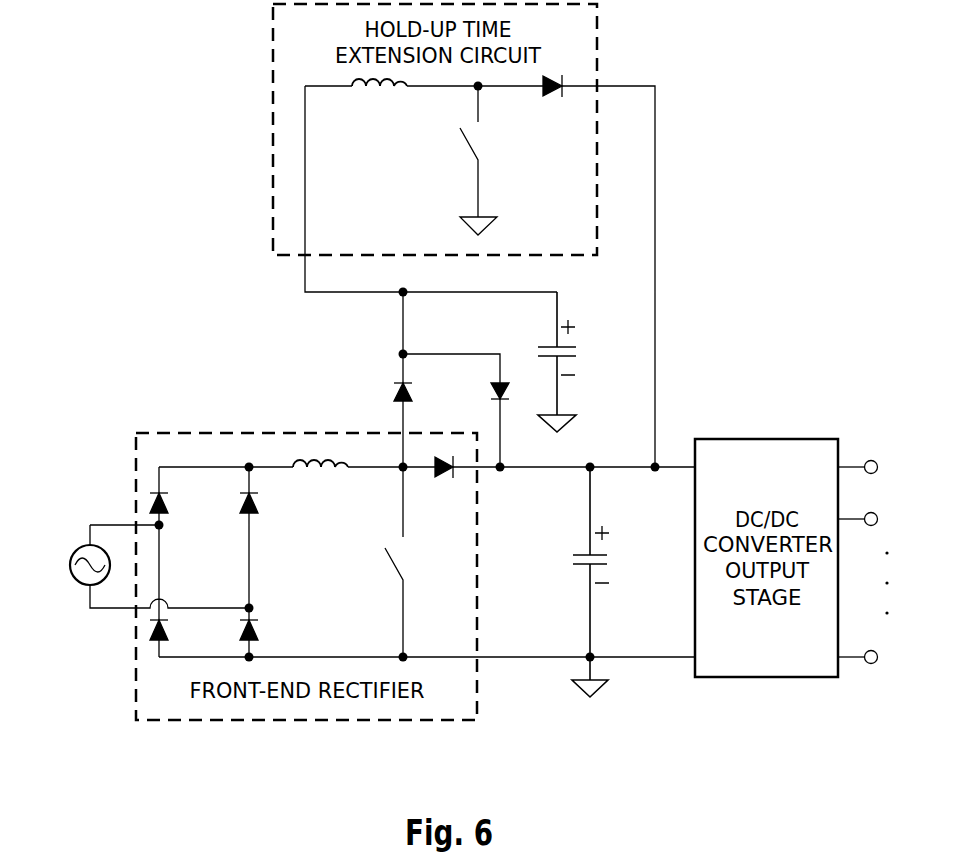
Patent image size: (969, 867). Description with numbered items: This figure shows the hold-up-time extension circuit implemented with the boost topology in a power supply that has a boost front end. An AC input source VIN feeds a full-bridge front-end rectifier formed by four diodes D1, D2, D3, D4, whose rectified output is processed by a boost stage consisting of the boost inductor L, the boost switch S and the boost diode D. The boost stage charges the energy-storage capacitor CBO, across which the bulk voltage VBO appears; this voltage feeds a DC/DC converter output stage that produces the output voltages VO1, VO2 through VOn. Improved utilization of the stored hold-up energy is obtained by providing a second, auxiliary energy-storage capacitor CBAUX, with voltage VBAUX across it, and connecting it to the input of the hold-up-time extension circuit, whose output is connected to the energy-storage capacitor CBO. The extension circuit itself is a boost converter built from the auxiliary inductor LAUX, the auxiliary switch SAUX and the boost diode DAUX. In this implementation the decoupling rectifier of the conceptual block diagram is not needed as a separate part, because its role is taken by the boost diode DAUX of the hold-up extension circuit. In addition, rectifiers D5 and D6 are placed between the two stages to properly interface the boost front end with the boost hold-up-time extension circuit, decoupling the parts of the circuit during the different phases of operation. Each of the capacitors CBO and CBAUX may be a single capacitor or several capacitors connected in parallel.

The auxiliary boost inductor LAUX is at (379, 103).
The boost diode of the hold-up-time extension circuit DAUX is at (558, 104).
The auxiliary boost switch SAUX is at (455, 160).
The auxiliary energy-storage capacitor CBAUX is at (530, 362).
The voltage across auxiliary energy-storage capacitor VBAUX is at (600, 347).
The rectifier D5 is at (384, 392).
The rectifier D6 is at (481, 392).
The front-end rectifier diode D1 is at (178, 507).
The front-end rectifier diode D2 is at (178, 634).
The front-end rectifier diode D3 is at (270, 507).
The front-end rectifier diode D4 is at (270, 634).
The input voltage source VIN is at (76, 565).
The boost inductor L is at (320, 482).
The boost diode D is at (446, 482).
The boost switch S is at (381, 562).
The energy-storage capacitor CBO is at (567, 582).
The voltage across energy-storage capacitor VBO is at (626, 554).
The first output voltage VO1 is at (879, 468).
The second output voltage VO2 is at (879, 521).
The n-th output voltage VOn is at (879, 658).